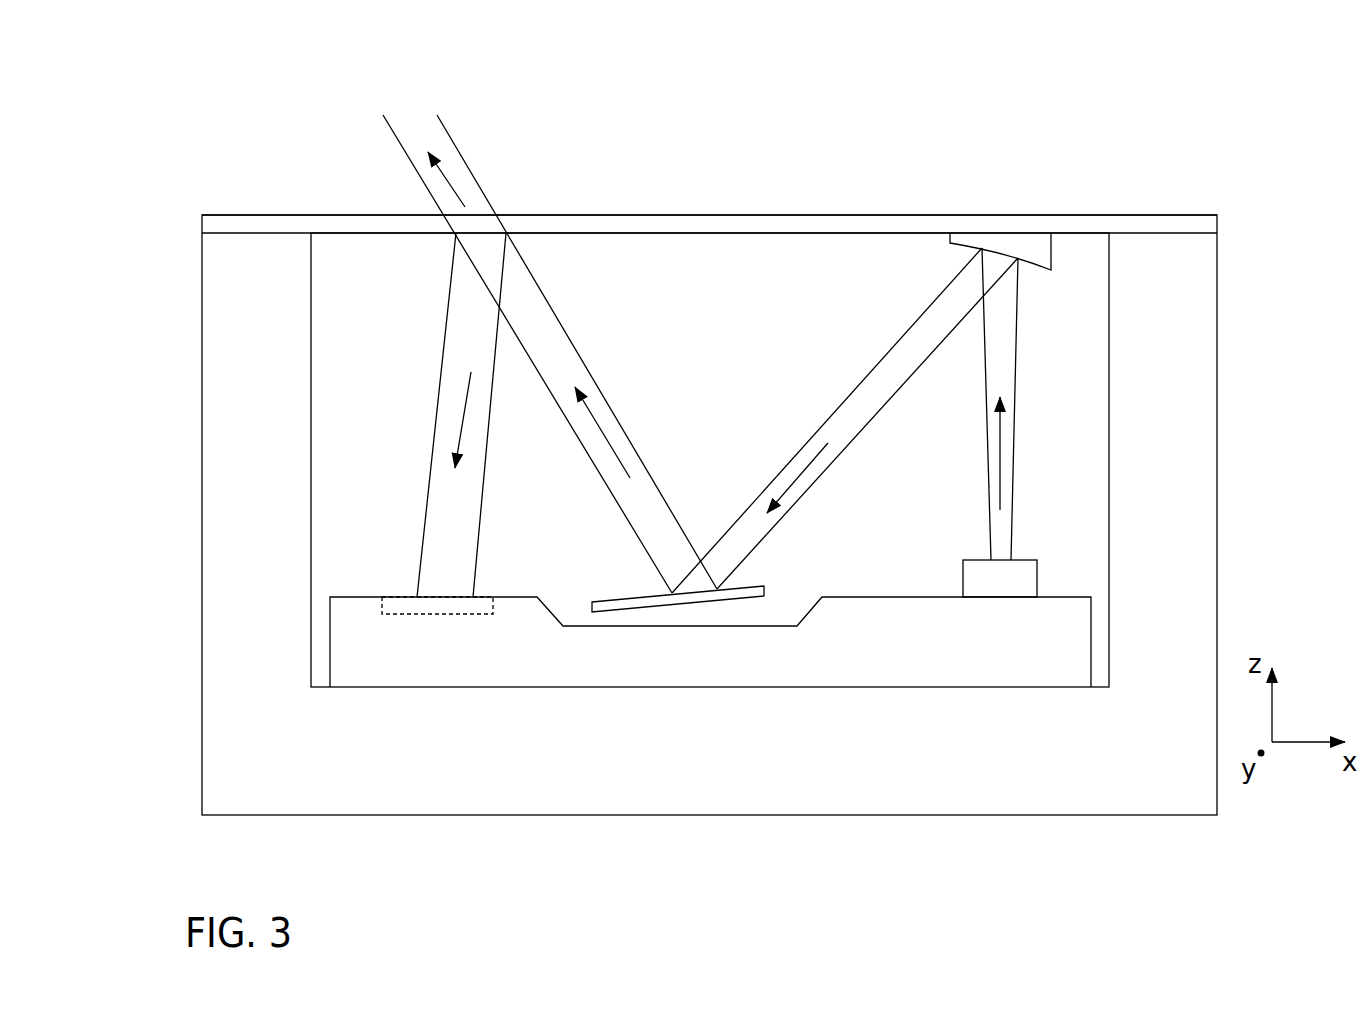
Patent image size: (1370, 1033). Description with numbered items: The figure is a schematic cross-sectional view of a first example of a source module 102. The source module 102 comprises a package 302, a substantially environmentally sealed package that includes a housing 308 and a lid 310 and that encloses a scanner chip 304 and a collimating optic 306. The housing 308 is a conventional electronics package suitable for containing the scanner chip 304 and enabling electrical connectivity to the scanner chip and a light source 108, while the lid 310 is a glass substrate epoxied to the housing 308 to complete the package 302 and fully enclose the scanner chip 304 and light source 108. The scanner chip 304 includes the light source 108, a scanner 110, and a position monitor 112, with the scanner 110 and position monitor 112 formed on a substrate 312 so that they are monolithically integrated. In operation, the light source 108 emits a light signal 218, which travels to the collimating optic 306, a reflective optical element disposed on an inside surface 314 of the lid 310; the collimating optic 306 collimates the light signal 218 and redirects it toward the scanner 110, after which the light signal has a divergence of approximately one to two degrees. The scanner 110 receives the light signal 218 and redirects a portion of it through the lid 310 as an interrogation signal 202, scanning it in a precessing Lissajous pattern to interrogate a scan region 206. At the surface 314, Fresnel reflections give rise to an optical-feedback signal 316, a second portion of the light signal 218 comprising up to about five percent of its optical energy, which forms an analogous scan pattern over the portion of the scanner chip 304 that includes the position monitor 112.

The source module 102 is at (228, 102).
The light source 108 is at (1000, 578).
The scanner 110 is at (789, 562).
The position monitor 112 is at (438, 605).
The interrogation signal 202 is at (473, 169).
The scan region 206 is at (442, 140).
The light signal 218 is at (985, 360).
The package 302 is at (968, 847).
The scanner chip 304 is at (637, 718).
The collimating optic 306 is at (1028, 245).
The housing 308 is at (1160, 783).
The lid 310 is at (1090, 225).
The substrate 312 is at (875, 665).
The inside surface 314 is at (603, 238).
The optical-feedback (OF) signal 316 is at (428, 462).